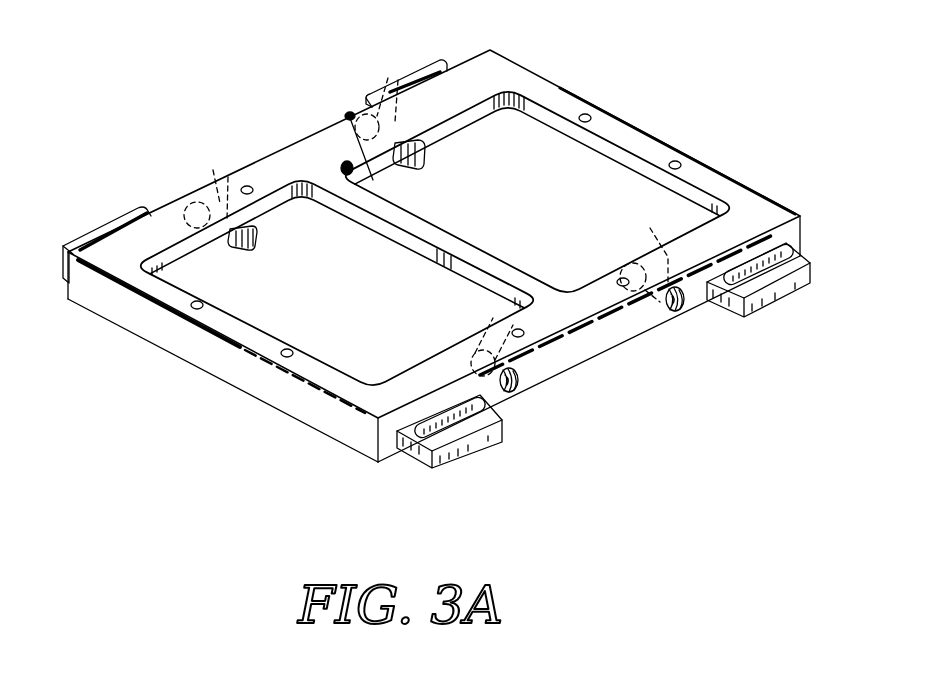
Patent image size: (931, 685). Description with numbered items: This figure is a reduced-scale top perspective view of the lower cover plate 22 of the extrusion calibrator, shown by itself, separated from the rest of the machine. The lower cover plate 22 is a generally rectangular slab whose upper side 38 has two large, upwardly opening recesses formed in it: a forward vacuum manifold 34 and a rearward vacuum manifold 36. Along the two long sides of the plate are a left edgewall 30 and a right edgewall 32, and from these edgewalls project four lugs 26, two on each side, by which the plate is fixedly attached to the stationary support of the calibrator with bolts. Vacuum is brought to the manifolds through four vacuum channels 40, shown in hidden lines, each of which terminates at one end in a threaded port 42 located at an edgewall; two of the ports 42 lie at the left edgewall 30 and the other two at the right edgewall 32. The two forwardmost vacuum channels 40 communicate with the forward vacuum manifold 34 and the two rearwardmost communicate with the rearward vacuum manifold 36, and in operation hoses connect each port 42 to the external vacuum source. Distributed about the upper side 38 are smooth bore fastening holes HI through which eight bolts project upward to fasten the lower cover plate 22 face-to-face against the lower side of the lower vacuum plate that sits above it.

The lower cover plate 22 is at (240, 386).
The lugs 26 is at (115, 218).
The left edgewall 30 is at (562, 357).
The right edgewall 32 is at (288, 149).
The forward vacuum manifold 34 is at (242, 310).
The rearward vacuum manifold 36 is at (600, 178).
The upper side 38 is at (604, 297).
The vacuum channels 40 is at (398, 83).
The threaded port 42 is at (352, 118).
The smooth bore fastening holes HI is at (246, 186).